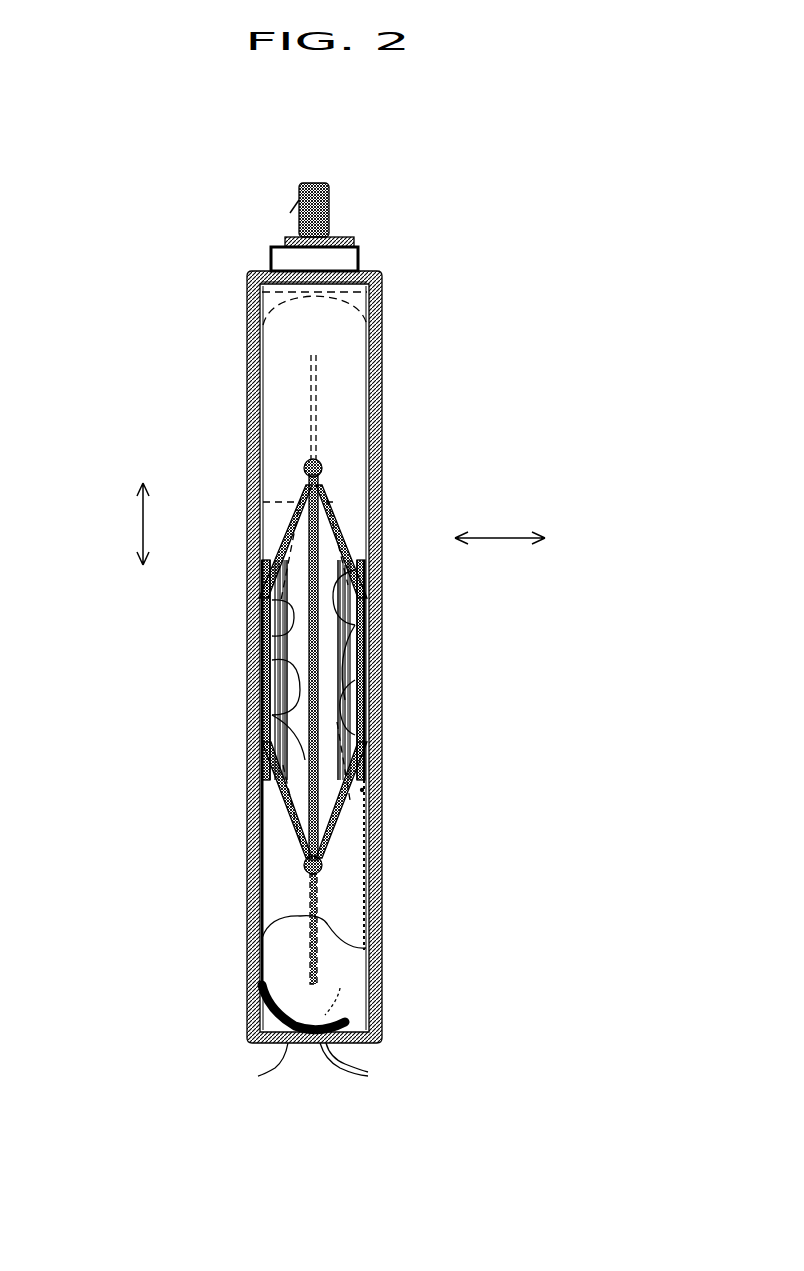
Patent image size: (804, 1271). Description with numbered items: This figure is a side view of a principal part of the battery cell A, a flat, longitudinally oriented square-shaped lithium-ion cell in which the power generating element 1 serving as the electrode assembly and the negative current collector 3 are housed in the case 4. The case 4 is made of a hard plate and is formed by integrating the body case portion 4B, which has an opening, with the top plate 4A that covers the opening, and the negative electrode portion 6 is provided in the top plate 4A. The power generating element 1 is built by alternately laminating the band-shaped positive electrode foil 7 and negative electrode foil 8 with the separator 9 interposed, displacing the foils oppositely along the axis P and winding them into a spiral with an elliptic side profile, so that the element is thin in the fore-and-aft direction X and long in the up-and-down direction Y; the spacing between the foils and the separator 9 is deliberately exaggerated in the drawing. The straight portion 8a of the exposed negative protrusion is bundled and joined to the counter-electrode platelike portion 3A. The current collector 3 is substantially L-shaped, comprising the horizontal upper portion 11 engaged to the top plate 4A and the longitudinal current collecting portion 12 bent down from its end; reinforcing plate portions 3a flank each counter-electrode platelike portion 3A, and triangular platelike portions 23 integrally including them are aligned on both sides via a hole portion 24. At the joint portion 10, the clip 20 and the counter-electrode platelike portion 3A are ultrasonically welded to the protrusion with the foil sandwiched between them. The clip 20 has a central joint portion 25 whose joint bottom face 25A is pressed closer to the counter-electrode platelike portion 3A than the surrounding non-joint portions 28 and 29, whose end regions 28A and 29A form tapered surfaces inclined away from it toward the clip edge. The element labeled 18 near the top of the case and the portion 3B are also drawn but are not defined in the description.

The battery cell A is at (395, 252).
The power generating element 1 is at (382, 1022).
The current collector 3 is at (352, 388).
The reinforcing plate portion 3a is at (247, 490).
The counter-electrode platelike portion 3A is at (247, 582).
The electrode assembly curved portion 3B is at (280, 370).
The case 4 is at (166, 265).
The top plate 4A is at (248, 265).
The body case portion 4B is at (248, 334).
The electrode portion 6 is at (297, 210).
The positive electrode foil 7 is at (255, 1010).
The negative electrode foil 8 is at (266, 1066).
The straight portion 8a is at (244, 765).
The separator 9 is at (353, 1026).
The joint portion 10 is at (244, 620).
The horizontal upper portion 11 is at (384, 282).
The longitudinal current collecting portion 12 is at (365, 423).
The terminal 18 is at (330, 207).
The clip 20 is at (244, 670).
The triangular platelike portion 23 is at (247, 532).
The hole portion 24 is at (313, 440).
The joint portion 25 is at (247, 655).
The joint bottom face 25A is at (244, 752).
The non-joint portion 28 is at (244, 604).
The end region 28A is at (244, 632).
The non-joint portion 29 is at (244, 738).
The end region 29A is at (244, 700).
The axis P is at (384, 790).
The fore-and-aft direction X is at (500, 538).
The up-and-down direction Y is at (143, 525).